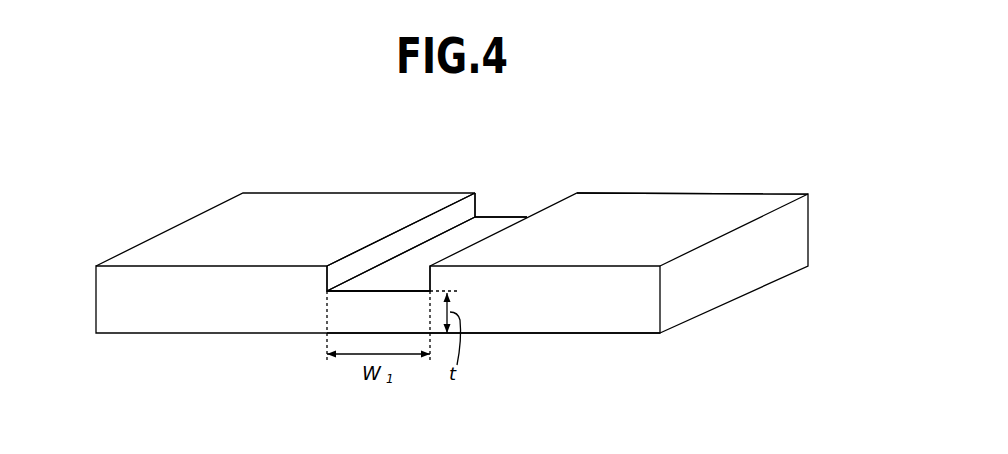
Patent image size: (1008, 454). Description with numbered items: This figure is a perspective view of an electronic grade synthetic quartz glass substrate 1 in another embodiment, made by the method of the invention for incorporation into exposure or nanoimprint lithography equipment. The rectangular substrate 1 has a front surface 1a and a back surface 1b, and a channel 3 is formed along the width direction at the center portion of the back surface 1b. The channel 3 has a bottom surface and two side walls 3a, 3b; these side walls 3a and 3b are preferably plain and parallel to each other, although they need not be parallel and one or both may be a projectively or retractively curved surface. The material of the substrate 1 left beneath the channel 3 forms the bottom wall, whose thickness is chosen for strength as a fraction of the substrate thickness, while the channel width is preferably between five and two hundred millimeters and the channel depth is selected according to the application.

The synthetic quartz glass substrate 1 is at (247, 232).
The front surface 1a is at (543, 337).
The back surface 1b is at (647, 215).
The channel 3 is at (442, 247).
The side wall 3a is at (343, 273).
The side wall 3b is at (422, 277).